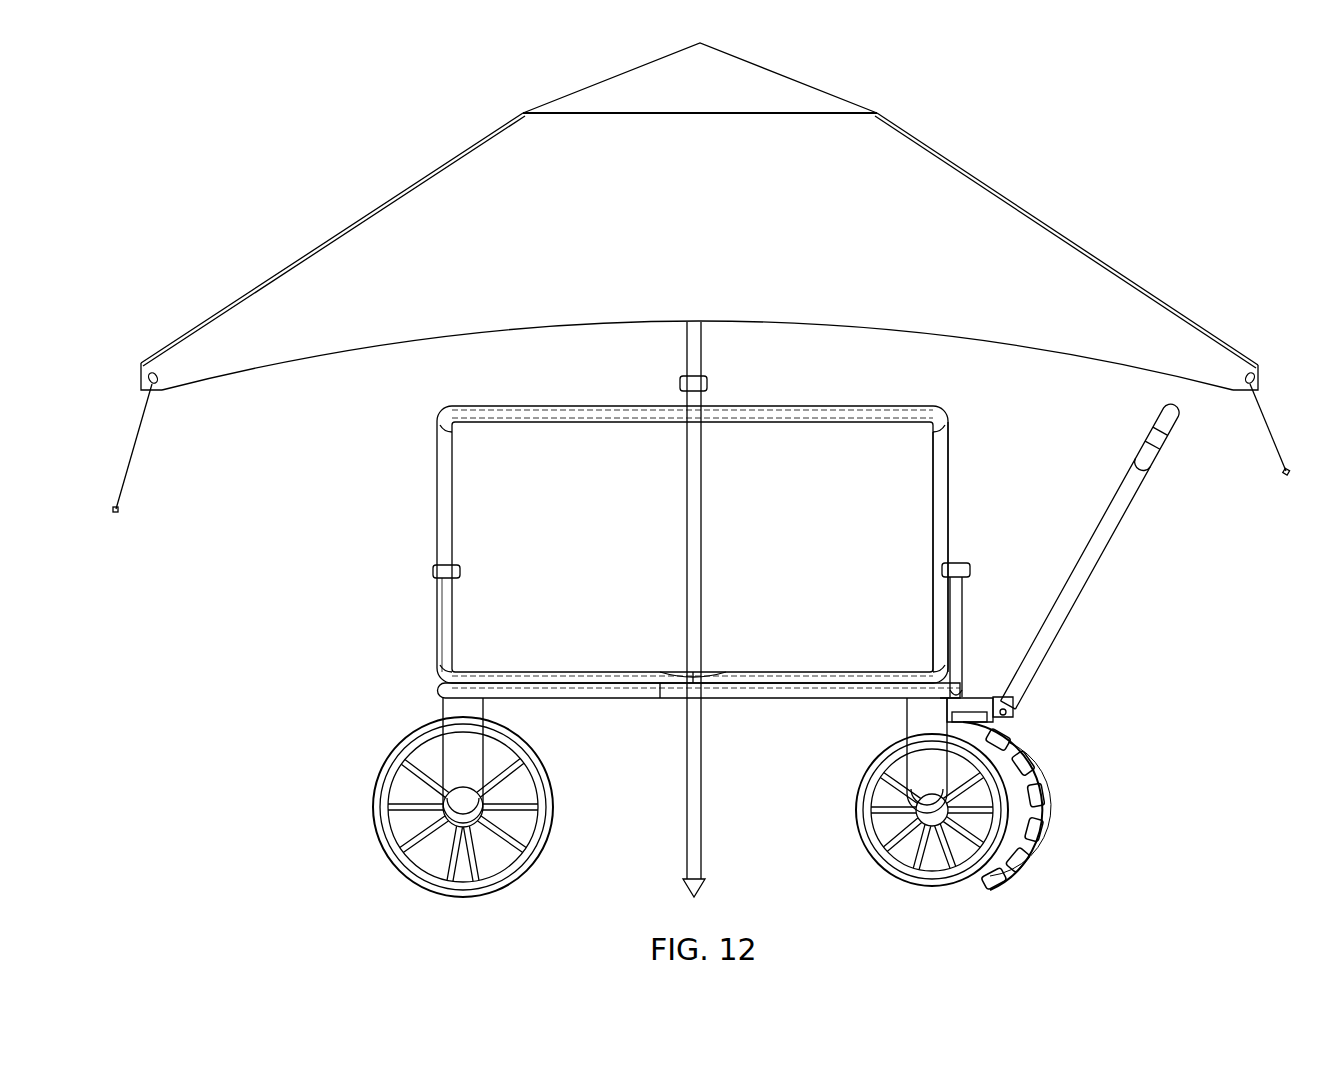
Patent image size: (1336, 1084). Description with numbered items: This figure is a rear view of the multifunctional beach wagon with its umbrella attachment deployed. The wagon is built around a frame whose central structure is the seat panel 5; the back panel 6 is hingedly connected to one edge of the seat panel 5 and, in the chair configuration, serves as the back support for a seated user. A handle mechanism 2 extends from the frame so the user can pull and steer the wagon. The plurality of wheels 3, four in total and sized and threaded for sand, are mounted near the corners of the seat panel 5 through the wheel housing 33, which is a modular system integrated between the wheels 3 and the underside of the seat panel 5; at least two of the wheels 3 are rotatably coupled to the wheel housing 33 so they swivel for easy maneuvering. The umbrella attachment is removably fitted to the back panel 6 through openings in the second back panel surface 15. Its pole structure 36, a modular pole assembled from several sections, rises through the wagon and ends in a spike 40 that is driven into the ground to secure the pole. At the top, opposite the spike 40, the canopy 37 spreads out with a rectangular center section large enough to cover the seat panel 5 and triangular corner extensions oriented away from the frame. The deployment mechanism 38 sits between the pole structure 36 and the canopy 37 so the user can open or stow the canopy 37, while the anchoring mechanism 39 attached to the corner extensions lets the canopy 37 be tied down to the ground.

The handle mechanism 2 is at (1054, 712).
The plurality of wheels 3 is at (537, 857).
The seat panel 5 is at (593, 692).
The back panel 6 is at (943, 452).
The second back panel surface 15 is at (475, 545).
The wheel housing 33 is at (912, 712).
The pole structure 36 is at (693, 366).
The canopy 37 is at (992, 129).
The deployment mechanism 38 is at (707, 382).
The anchoring mechanism 39 is at (158, 424).
The spike 40 is at (700, 887).